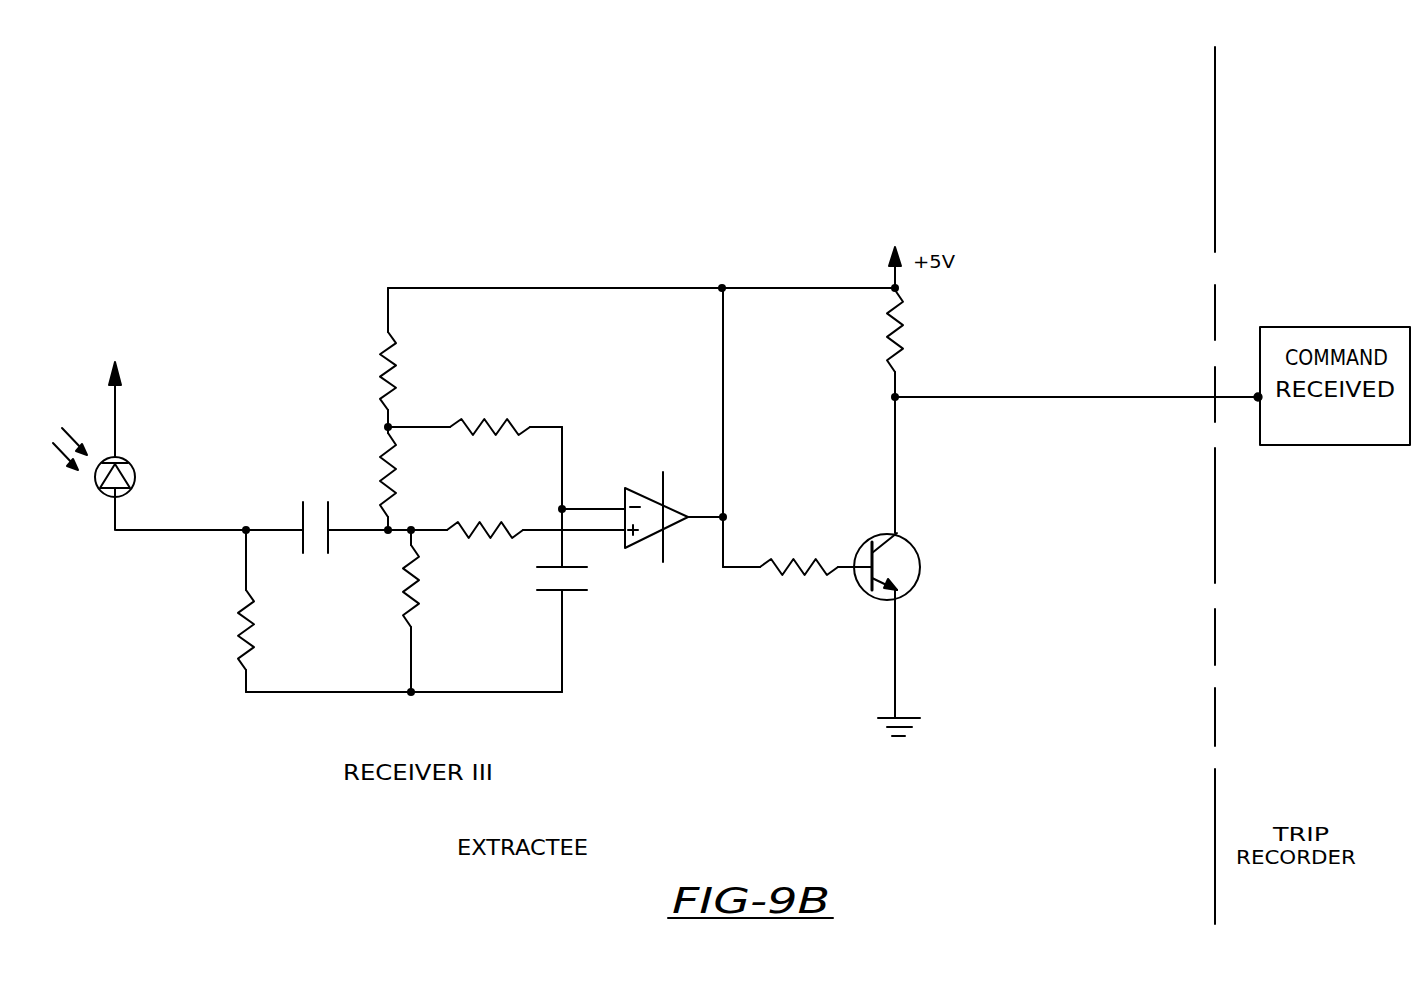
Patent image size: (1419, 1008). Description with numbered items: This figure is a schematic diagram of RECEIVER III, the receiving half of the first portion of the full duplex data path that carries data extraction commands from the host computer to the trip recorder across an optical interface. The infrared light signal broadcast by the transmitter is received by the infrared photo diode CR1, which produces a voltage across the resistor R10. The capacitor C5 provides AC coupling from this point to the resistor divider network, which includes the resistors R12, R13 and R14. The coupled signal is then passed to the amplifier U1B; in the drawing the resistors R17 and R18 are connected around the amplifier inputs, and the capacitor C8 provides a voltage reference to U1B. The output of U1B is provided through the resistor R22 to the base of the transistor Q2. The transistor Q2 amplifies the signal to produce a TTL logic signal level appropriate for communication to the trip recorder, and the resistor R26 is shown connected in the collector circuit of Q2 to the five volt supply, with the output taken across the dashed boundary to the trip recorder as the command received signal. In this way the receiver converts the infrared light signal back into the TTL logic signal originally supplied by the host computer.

The infrared photo diode CR1 is at (94, 432).
The capacitor C5 is at (312, 513).
The resistor R10 is at (274, 630).
The resistor R12 is at (418, 371).
The resistor R13 is at (416, 475).
The resistor R14 is at (438, 586).
The resistor R17 is at (490, 411).
The resistor R18 is at (485, 517).
The capacitor C8 is at (578, 579).
The amplifier U1B is at (658, 514).
The resistor R22 is at (799, 553).
The transistor Q2 is at (879, 567).
The resistor R26 is at (923, 331).